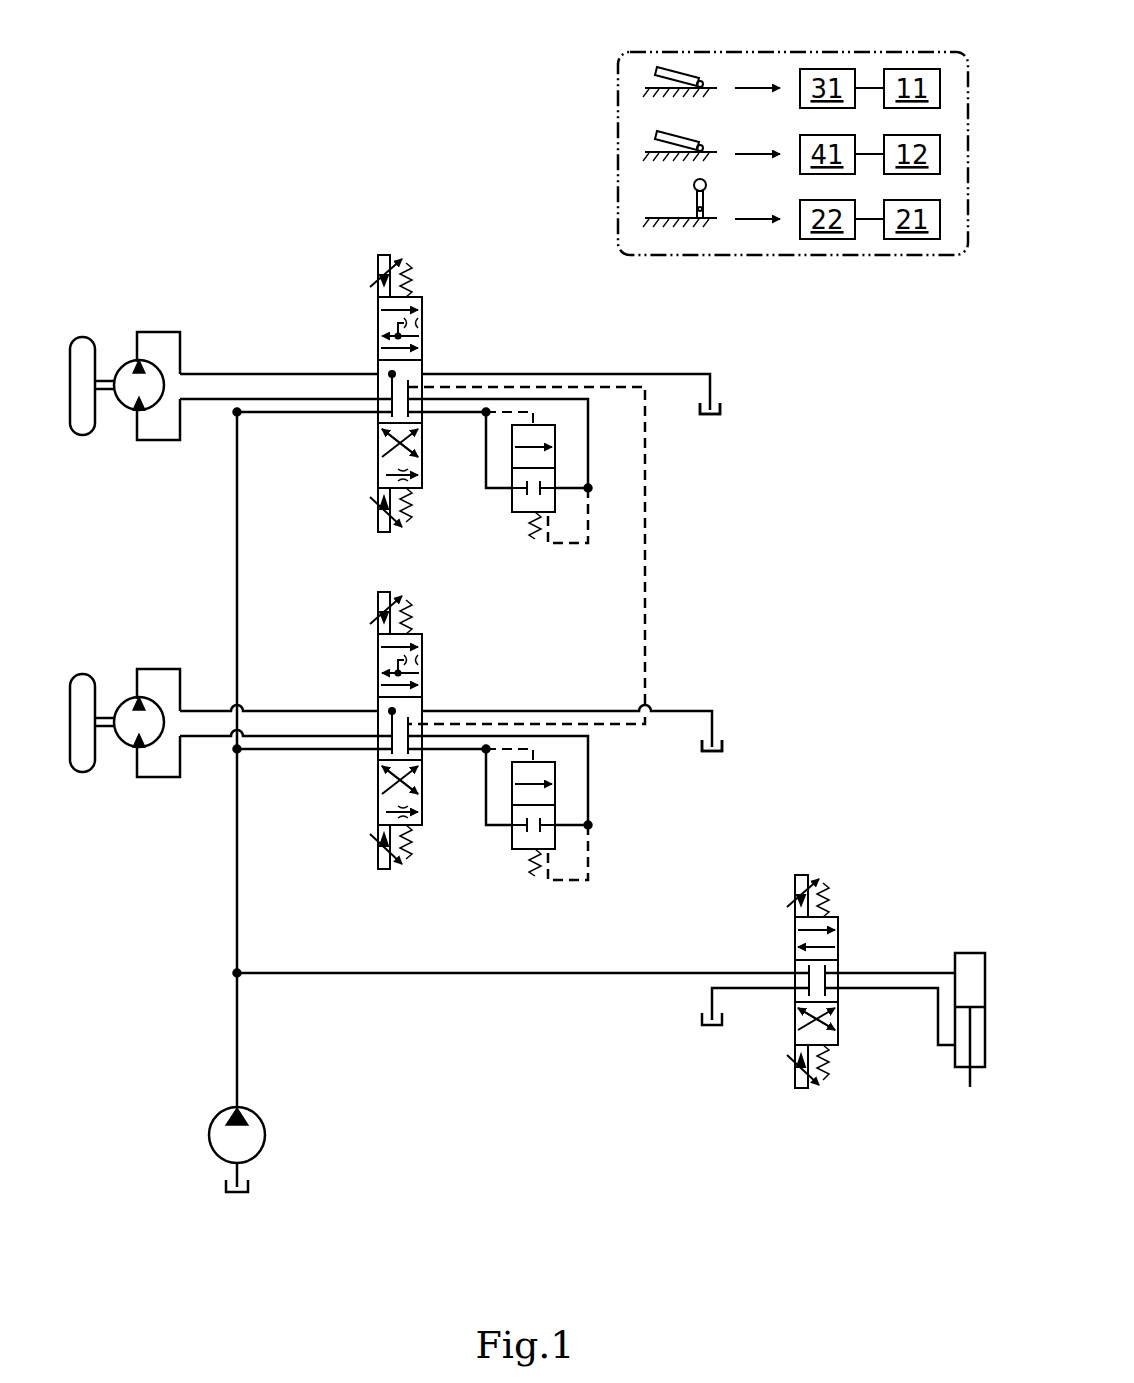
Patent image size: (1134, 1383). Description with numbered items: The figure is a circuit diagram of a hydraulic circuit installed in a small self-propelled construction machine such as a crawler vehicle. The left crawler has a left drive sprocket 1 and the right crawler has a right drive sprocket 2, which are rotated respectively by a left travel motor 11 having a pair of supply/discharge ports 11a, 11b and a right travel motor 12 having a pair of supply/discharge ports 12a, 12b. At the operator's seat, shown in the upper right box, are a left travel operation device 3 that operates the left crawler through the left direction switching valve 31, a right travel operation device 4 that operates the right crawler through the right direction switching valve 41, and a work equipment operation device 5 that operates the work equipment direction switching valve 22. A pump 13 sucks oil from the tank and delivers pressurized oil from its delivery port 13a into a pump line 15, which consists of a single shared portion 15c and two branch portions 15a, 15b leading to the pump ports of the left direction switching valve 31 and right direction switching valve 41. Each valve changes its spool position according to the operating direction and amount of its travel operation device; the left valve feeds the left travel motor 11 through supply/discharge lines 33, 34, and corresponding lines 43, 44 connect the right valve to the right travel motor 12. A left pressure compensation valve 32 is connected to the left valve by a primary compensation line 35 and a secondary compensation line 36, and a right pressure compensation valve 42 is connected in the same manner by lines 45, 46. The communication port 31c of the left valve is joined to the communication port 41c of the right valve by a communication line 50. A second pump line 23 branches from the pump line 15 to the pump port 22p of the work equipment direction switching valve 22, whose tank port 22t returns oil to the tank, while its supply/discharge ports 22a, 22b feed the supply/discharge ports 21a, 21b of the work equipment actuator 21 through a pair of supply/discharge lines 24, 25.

The left drive sprocket 1 is at (82, 674).
The right drive sprocket 2 is at (82, 337).
The left travel operation device 3 is at (672, 72).
The right travel operation device 4 is at (665, 138).
The work equipment operation device 5 is at (694, 187).
The left travel motor 11 is at (117, 705).
The supply/discharge port of left travel motor 11a is at (140, 699).
The supply/discharge port of left travel motor 11b is at (131, 743).
The right travel motor 12 is at (117, 368).
The supply/discharge port of right travel motor 12a is at (140, 362).
The supply/discharge port of right travel motor 12b is at (131, 406).
The pump 13 is at (266, 1133).
The delivery port 13a is at (236, 1105).
The pump line 15 is at (212, 906).
The branch portion 15a is at (273, 750).
The branch portion 15b is at (237, 533).
The shared portion 15c is at (237, 873).
The work equipment actuator 21 is at (968, 953).
The supply/discharge port of work equipment actuator 21a is at (955, 963).
The supply/discharge port of work equipment actuator 21b is at (955, 1050).
The work equipment direction switching valve 22 is at (838, 1032).
The supply/discharge port of work equipment direction switching valve 22a is at (840, 930).
The supply/discharge port of work equipment direction switching valve 22b is at (840, 990).
The pump port 22p is at (795, 968).
The tank port 22t is at (795, 1002).
The second pump line 23 is at (425, 975).
The supply/discharge line 24 is at (878, 973).
The supply/discharge line 25 is at (920, 990).
The left direction switching valve 31 is at (421, 827).
The communication port 31c is at (424, 715).
The left pressure compensation valve 32 is at (515, 850).
The supply/discharge line 33 is at (197, 711).
The supply/discharge line 34 is at (198, 737).
The primary compensation line 35 is at (486, 827).
The secondary compensation line 36 is at (592, 785).
The right direction switching valve 41 is at (421, 490).
The communication port 41c is at (424, 378).
The right pressure compensation valve 42 is at (515, 513).
The third motor line 43 is at (197, 374).
The fourth motor line 44 is at (198, 400).
The second pilot line 45 is at (486, 490).
The second return branch line 46 is at (592, 448).
The communication line 50 is at (648, 528).